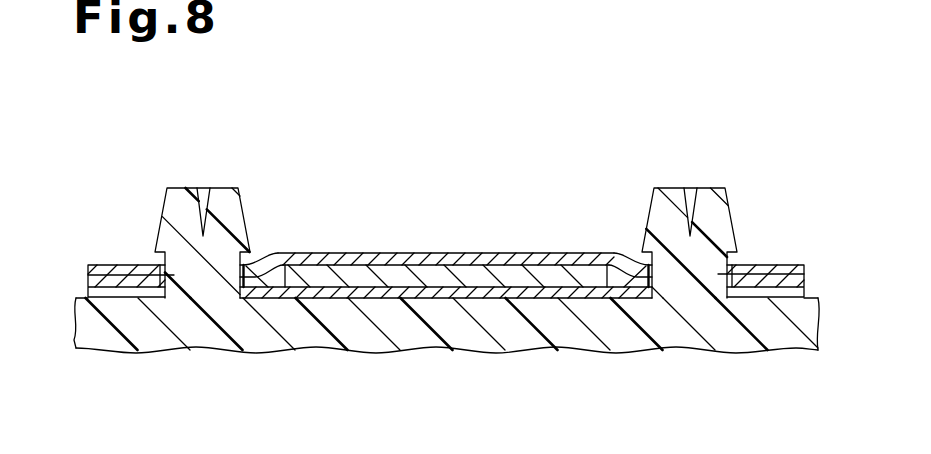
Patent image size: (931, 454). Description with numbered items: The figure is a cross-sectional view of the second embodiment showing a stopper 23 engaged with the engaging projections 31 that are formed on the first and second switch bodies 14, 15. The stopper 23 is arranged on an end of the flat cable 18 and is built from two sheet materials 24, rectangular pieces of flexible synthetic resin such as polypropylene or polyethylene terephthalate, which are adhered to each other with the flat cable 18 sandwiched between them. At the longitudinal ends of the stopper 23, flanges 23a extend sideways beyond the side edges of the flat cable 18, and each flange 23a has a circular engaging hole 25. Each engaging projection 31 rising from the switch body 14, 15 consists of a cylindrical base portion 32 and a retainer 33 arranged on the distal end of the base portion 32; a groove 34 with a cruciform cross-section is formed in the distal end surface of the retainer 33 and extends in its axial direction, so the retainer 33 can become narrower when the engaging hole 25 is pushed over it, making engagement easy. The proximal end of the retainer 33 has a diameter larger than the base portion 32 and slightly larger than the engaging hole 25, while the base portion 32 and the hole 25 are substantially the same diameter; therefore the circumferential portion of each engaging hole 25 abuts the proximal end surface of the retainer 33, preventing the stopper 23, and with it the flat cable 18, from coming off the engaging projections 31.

The first switch body 14 is at (463, 374).
The second switch body 15 is at (815, 318).
The flat cable 18 is at (433, 275).
The stopper 23 is at (446, 291).
The flange 23a is at (118, 283).
The sheet material 24 is at (538, 253).
The engaging hole 25 is at (244, 281).
The engaging projection 31 is at (445, 217).
The base portion 32 is at (155, 265).
The retainer 33 is at (445, 217).
The groove 34 is at (203, 200).